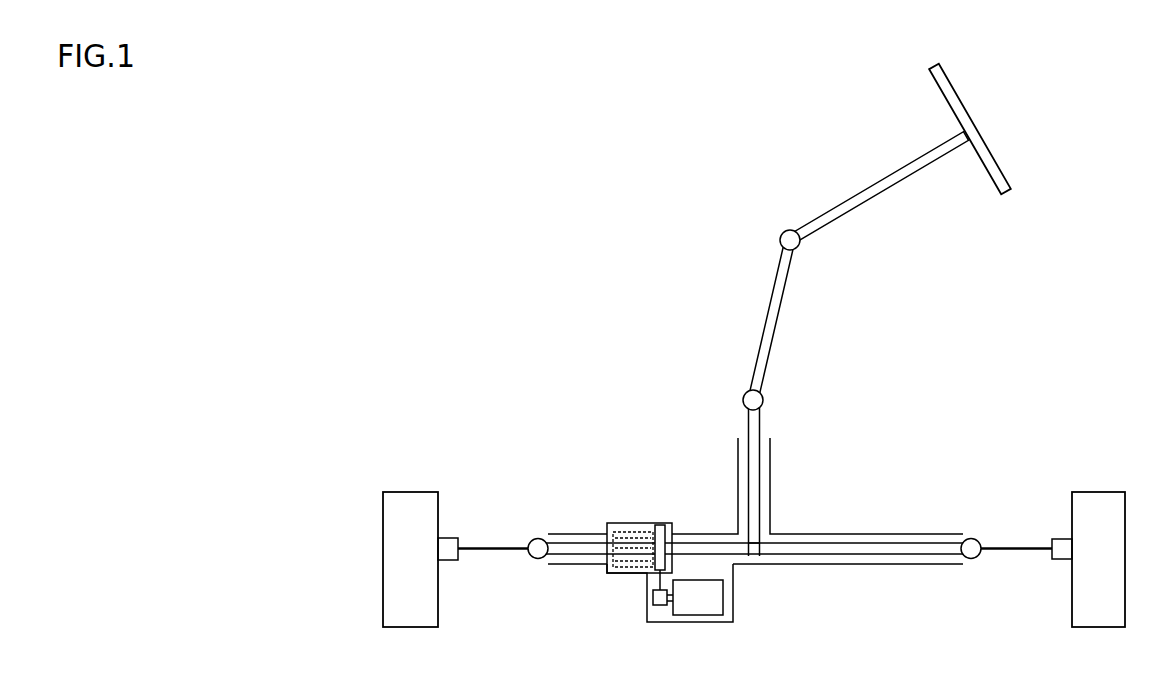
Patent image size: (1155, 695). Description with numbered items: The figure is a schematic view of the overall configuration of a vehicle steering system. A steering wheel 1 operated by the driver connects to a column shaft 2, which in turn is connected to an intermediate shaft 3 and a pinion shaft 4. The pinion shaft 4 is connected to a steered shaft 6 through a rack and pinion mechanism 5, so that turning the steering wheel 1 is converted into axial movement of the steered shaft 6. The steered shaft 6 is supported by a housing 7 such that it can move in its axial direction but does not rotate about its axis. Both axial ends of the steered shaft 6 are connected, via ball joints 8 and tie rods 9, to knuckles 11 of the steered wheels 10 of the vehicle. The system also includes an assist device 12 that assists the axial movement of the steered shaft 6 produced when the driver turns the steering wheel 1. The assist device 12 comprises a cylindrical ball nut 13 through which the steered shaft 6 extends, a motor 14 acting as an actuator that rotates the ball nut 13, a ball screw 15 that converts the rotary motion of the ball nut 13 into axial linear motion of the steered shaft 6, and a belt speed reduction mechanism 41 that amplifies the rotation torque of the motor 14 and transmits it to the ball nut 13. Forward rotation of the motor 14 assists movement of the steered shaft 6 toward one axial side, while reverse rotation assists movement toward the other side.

The steering wheel 1 is at (963, 105).
The column shaft 2 is at (860, 190).
The intermediate shaft 3 is at (768, 317).
The pinion shaft 4 is at (748, 428).
The rack and pinion mechanism 5 is at (755, 557).
The steered shaft 6 is at (880, 549).
The housing 7 is at (830, 534).
The ball joints 8 is at (535, 538).
The tie rods 9 is at (493, 547).
The steered wheels 10 is at (407, 492).
The knuckles 11 is at (455, 538).
The assist device 12 is at (660, 629).
The ball nut 13 is at (632, 527).
The motor 14 is at (707, 616).
The ball screw 15 is at (658, 581).
The belt speed reduction mechanism 41 is at (648, 597).